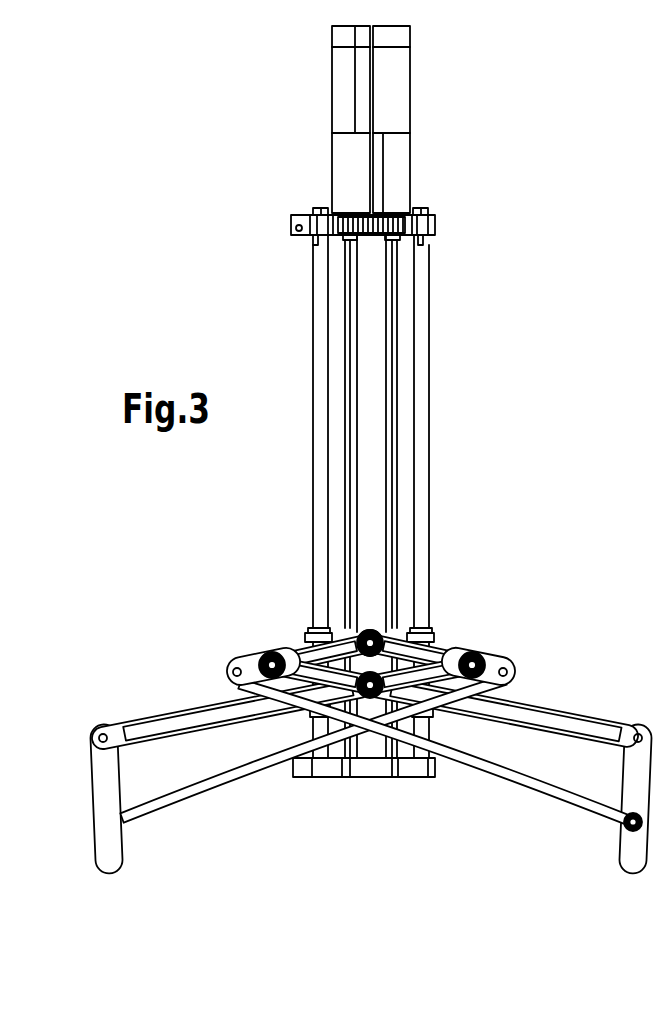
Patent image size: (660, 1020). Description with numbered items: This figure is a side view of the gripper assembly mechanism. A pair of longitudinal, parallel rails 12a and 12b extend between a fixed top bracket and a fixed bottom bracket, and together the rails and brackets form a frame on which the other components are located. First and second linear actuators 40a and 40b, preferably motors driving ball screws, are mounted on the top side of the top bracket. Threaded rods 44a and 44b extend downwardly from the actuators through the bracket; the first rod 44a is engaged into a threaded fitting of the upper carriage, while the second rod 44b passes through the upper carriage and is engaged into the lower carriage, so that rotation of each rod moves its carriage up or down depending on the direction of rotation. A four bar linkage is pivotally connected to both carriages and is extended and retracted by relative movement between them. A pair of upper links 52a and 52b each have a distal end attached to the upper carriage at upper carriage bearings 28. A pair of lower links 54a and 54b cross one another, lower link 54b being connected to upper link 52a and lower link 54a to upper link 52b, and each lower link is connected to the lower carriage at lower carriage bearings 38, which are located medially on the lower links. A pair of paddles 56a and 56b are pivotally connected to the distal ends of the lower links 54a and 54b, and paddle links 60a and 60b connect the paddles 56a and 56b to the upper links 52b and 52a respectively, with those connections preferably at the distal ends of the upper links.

The rail 12a is at (320, 368).
The rail 12b is at (420, 368).
The upper carriage bearings 28 is at (371, 630).
The lower carriage bearings 38 is at (371, 697).
The first linear actuator 40a is at (343, 93).
The second linear actuator 40b is at (397, 91).
The first linear actuator rod 44a is at (352, 299).
The second linear actuator rod 44b is at (397, 299).
The upper link 52a is at (306, 652).
The upper link 52b is at (434, 652).
The lower link 54a is at (197, 716).
The lower link 54b is at (548, 720).
The paddle 56a is at (112, 862).
The paddle 56b is at (636, 855).
The paddle link 60a is at (220, 787).
The paddle link 60b is at (513, 783).